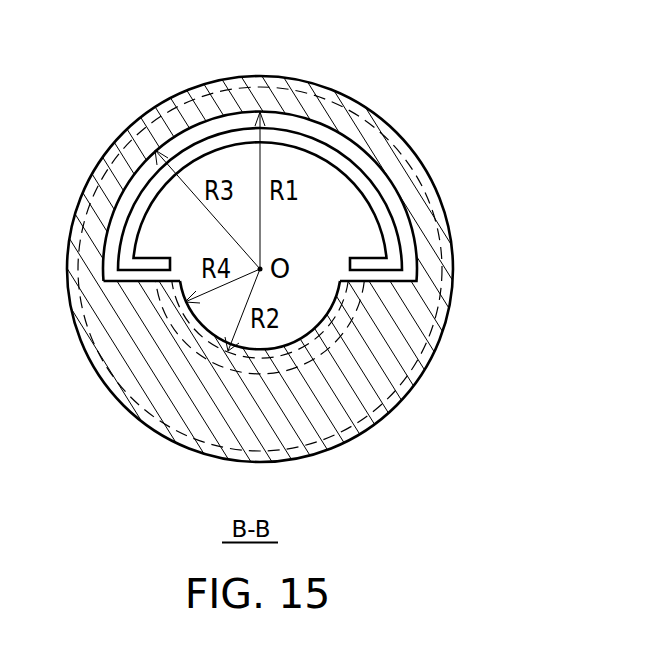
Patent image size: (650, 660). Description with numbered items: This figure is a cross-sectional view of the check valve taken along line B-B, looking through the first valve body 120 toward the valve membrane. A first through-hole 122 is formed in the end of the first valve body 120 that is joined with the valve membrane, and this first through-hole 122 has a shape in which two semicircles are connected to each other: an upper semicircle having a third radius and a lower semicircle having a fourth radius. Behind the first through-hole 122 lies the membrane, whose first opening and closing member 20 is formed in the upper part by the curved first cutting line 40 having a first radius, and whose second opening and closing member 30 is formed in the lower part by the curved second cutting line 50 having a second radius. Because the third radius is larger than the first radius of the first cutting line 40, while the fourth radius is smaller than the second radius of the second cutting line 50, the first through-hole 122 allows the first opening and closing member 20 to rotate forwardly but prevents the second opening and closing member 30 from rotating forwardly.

The first opening and closing member 20 is at (326, 196).
The second opening and closing member 30 is at (327, 347).
The first cutting line 40 is at (269, 131).
The second cutting line 50 is at (292, 362).
The first valve body 120 is at (410, 143).
The first through-hole 122 is at (403, 208).